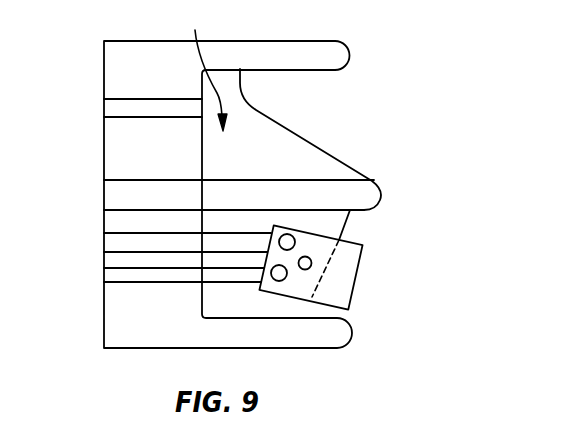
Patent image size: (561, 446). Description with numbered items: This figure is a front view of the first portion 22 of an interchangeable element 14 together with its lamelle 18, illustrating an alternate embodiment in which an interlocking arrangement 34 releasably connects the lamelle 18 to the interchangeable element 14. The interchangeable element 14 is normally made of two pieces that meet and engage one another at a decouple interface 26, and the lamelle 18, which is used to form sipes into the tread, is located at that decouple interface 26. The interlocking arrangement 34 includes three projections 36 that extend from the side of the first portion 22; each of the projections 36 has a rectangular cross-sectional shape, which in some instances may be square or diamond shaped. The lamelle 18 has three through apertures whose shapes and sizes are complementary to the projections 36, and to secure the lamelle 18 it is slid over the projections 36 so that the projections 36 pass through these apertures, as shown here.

The interchangeable element 14 is at (339, 50).
The first portion 22 is at (112, 38).
The decouple interface 26 is at (206, 69).
The lamelle 18 is at (347, 280).
The projections 36 is at (282, 234).
The interlocking arrangement 34 is at (305, 270).